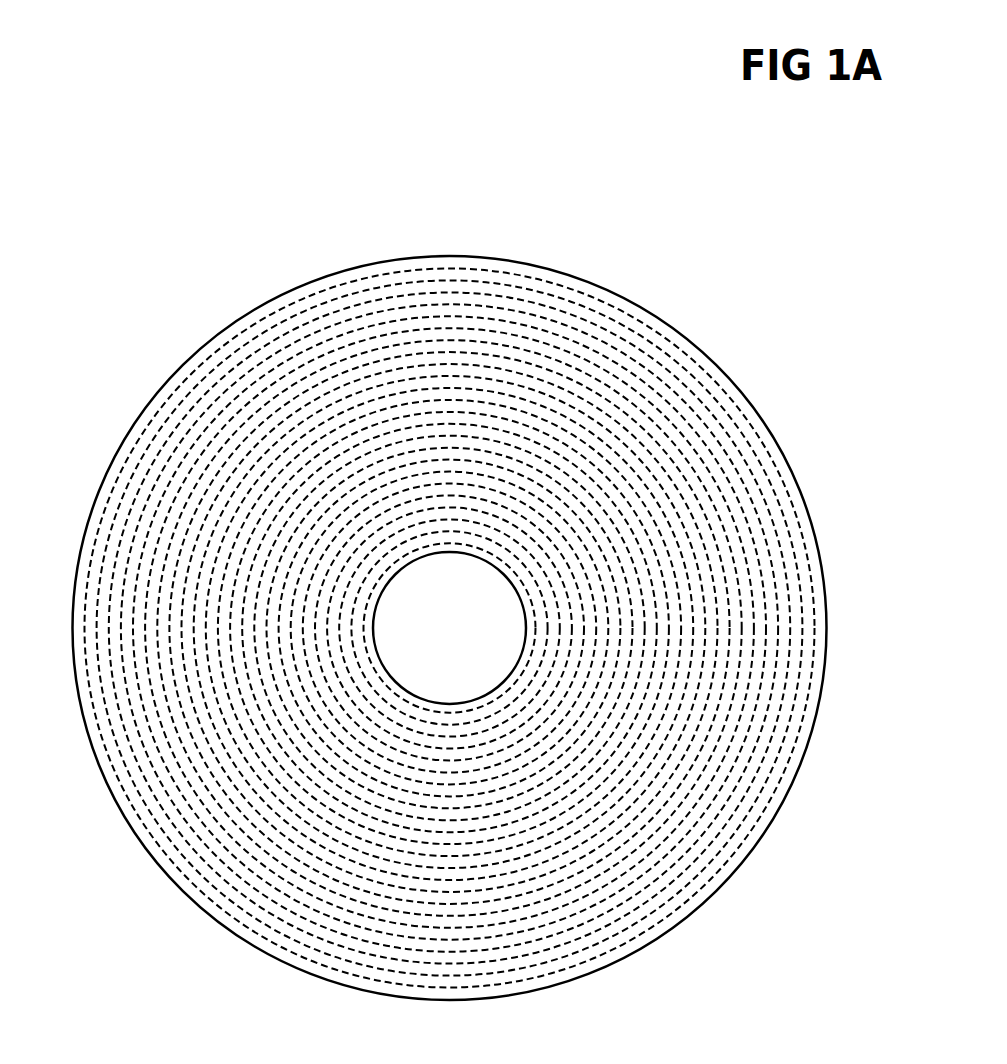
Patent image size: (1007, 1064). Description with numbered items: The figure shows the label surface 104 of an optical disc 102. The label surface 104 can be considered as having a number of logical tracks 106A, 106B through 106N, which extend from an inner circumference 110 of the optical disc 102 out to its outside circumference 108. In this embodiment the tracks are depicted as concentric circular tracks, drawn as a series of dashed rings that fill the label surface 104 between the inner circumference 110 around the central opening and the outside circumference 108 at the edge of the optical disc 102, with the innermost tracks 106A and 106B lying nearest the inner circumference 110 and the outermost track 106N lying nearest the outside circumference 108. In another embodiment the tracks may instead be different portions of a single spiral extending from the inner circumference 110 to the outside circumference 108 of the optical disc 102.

The optical disc 102 is at (122, 166).
The label surface 104 is at (557, 310).
The logical track 106A is at (366, 624).
The logical track 106B is at (362, 664).
The logical track 106N is at (236, 338).
The outside circumference 108 is at (364, 267).
The inner circumference 110 is at (476, 552).